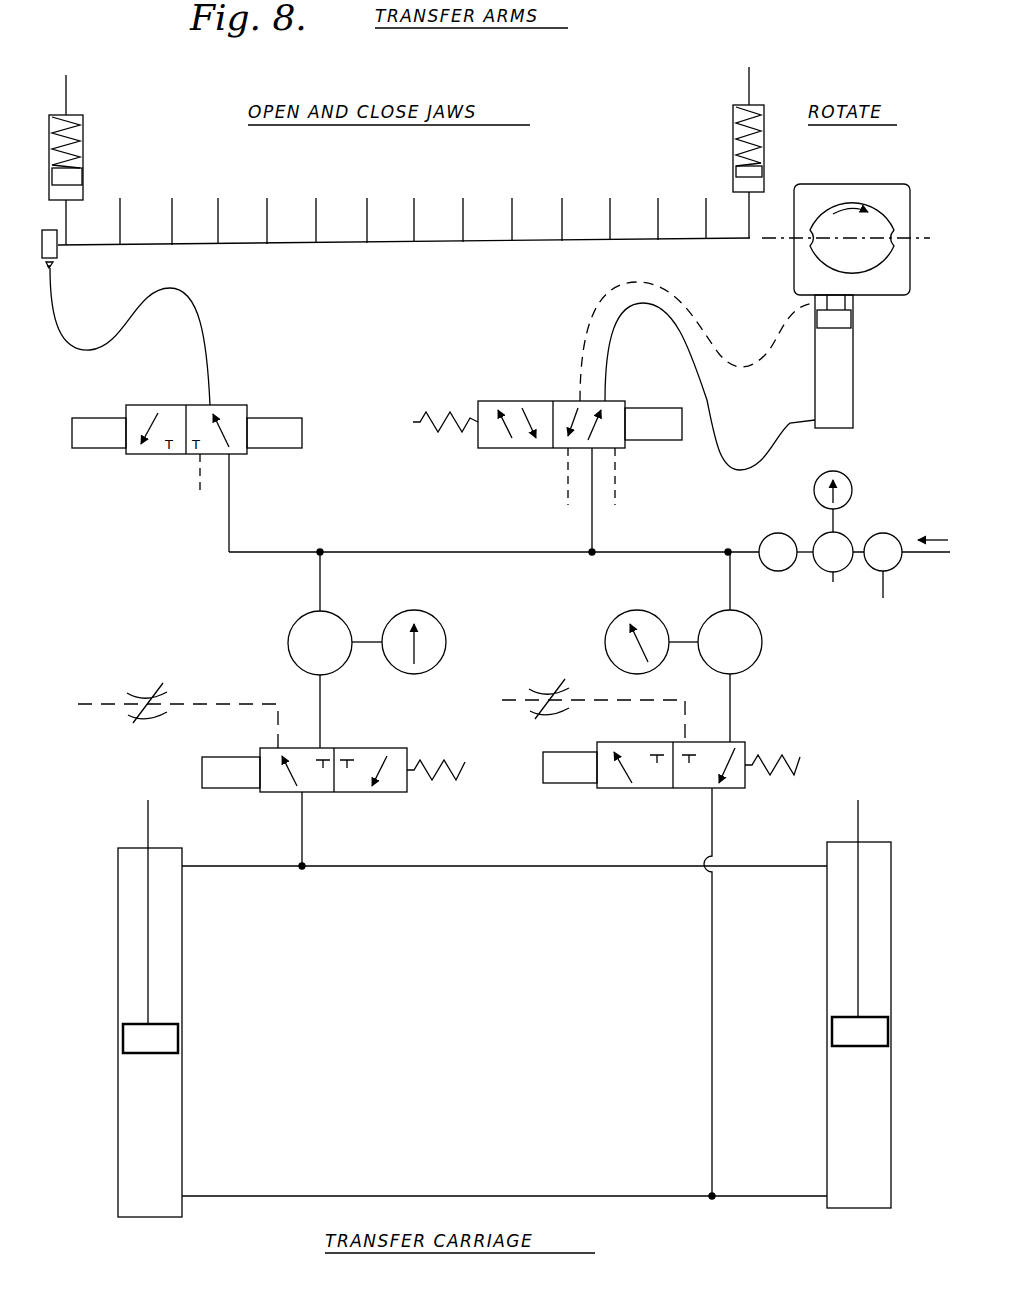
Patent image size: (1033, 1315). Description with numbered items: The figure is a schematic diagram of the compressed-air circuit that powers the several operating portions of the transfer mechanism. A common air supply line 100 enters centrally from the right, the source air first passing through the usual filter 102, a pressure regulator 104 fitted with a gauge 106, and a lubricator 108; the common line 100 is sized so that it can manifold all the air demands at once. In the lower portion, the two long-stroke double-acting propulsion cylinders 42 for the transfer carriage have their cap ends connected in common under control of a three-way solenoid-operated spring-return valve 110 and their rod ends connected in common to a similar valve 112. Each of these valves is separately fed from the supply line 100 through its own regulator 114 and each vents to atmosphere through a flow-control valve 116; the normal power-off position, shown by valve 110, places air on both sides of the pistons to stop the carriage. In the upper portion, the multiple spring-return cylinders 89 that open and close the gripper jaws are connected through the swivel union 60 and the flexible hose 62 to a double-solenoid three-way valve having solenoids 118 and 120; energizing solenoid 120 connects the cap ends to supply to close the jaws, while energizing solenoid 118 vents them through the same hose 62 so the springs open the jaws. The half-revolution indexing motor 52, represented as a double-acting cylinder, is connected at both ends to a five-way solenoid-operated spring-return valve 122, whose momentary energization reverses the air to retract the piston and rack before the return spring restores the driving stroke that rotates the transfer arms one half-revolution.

The propulsion cylinder 42 is at (182, 1103).
The indexing motor 52 is at (893, 296).
The swivel union 60 is at (57, 258).
The flexible hose 62 is at (128, 321).
The spring-return cylinder 89 is at (83, 131).
The common air supply line 100 is at (408, 552).
The filter 102 is at (884, 576).
The pressure regulator 104 is at (838, 568).
The gauge 106 is at (852, 487).
The lubricator 108 is at (767, 538).
The 3-way solenoid-operated spring-return valve 110 is at (650, 788).
The 3-way solenoid-operated spring-return valve 112 is at (371, 792).
The regulator 114 is at (289, 633).
The flow-control valve 116 is at (143, 697).
The solenoid 118 is at (98, 449).
The solenoid 120 is at (292, 418).
The 5-way solenoid-operated spring-return valve 122 is at (525, 400).